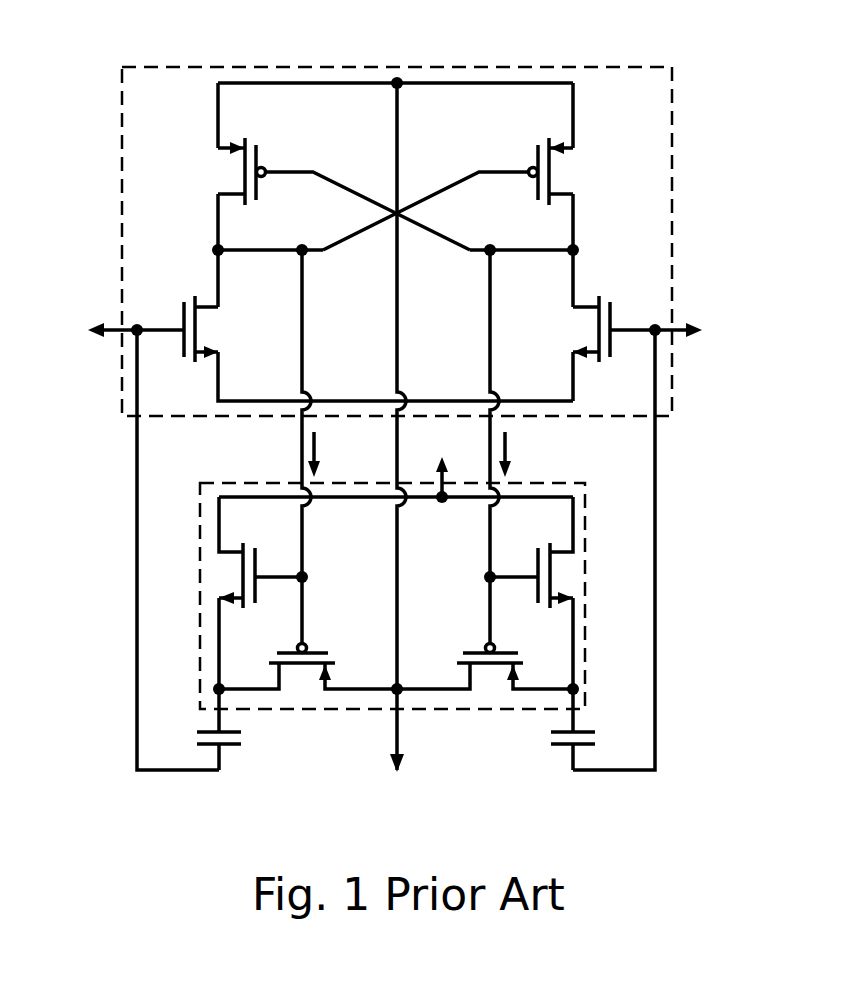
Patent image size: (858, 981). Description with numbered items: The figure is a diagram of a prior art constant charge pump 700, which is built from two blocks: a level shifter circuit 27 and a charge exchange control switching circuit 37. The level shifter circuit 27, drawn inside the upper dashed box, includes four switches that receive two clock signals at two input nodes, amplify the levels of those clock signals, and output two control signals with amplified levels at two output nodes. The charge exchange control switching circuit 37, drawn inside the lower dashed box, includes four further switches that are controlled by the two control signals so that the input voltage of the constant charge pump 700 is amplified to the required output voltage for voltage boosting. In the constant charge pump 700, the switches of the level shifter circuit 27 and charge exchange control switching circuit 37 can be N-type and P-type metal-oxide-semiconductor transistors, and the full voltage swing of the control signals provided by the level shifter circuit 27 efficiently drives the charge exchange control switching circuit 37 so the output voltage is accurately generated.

The constant charge pump 700 is at (722, 112).
The level shifter circuit 27 is at (672, 243).
The charge exchange control switching circuit 37 is at (585, 610).